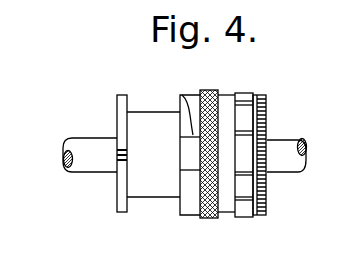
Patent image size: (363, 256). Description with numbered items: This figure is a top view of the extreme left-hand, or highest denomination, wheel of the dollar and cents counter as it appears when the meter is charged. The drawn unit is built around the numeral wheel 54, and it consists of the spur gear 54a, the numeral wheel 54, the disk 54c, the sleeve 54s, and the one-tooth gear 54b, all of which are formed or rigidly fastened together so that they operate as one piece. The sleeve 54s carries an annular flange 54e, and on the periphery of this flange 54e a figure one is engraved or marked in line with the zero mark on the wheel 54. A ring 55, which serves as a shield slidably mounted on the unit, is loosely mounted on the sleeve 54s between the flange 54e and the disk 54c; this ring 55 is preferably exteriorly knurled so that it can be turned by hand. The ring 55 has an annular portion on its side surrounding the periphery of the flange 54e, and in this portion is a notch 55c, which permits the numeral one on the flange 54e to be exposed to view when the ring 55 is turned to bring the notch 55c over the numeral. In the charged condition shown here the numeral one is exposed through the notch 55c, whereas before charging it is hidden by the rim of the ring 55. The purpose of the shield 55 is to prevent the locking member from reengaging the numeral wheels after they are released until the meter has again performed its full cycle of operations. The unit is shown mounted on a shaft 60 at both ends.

The numeral wheel 54 is at (268, 139).
The spur gear 54a is at (263, 193).
The one-tooth gear 54b is at (122, 103).
The disk 54c is at (225, 102).
The annular flange 54e is at (178, 163).
The sleeve 54s is at (155, 185).
The shield 55 is at (216, 80).
The notch 55c is at (187, 100).
The shaft 60 is at (83, 163).